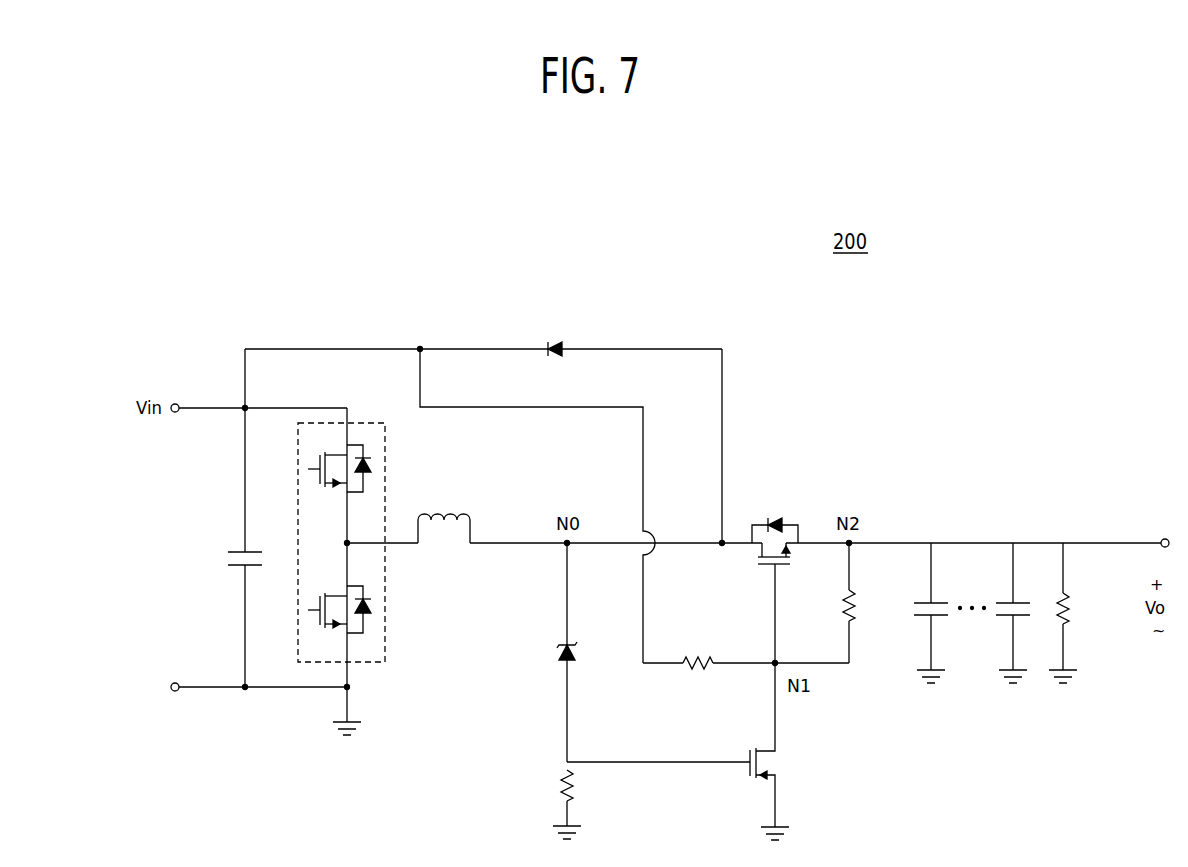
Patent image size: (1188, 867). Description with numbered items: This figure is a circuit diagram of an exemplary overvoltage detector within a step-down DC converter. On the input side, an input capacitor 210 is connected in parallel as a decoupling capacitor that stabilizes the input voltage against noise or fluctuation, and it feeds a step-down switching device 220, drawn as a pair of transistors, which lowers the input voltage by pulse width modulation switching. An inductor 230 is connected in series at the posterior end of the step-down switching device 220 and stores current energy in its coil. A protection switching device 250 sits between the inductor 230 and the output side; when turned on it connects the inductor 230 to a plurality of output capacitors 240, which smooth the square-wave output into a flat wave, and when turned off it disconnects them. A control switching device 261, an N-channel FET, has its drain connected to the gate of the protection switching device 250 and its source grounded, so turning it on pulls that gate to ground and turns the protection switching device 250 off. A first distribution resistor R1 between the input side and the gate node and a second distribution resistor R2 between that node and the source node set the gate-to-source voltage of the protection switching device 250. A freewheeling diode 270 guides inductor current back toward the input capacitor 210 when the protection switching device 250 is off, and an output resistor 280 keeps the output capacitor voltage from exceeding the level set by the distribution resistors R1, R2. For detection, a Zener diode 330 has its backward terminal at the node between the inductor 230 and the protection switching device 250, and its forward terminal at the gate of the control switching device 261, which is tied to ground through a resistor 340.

The input capacitor 210 is at (228, 556).
The step-down switching device 220 is at (385, 637).
The inductor 230 is at (447, 518).
The output capacitor 240 is at (920, 600).
The protection switching device 250 is at (772, 524).
The control switching device 261 is at (778, 762).
The freewheeling diode 270 is at (557, 345).
The output resistor 280 is at (1068, 605).
The Zener diode 330 is at (572, 660).
The resistor 340 is at (560, 790).
The first distribution resistor R1 is at (746, 650).
The second distribution resistor R2 is at (864, 603).